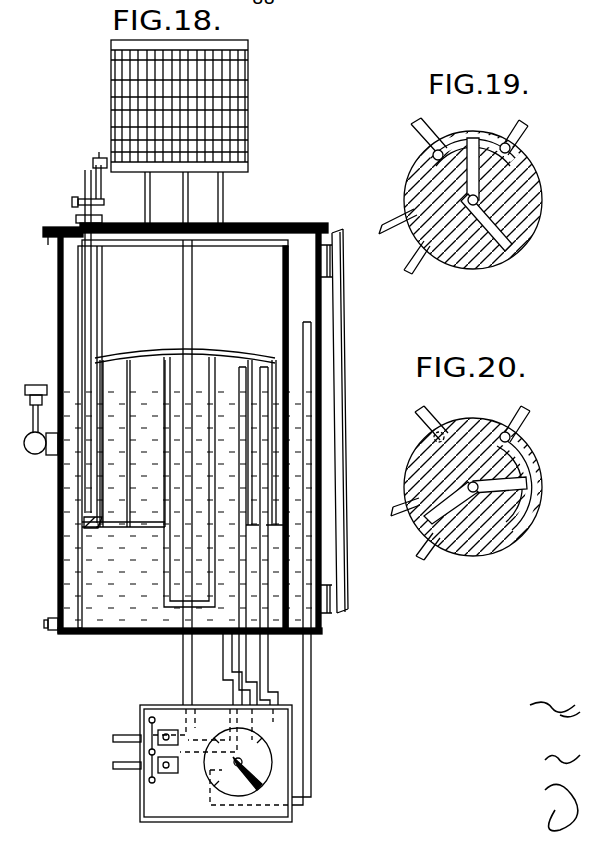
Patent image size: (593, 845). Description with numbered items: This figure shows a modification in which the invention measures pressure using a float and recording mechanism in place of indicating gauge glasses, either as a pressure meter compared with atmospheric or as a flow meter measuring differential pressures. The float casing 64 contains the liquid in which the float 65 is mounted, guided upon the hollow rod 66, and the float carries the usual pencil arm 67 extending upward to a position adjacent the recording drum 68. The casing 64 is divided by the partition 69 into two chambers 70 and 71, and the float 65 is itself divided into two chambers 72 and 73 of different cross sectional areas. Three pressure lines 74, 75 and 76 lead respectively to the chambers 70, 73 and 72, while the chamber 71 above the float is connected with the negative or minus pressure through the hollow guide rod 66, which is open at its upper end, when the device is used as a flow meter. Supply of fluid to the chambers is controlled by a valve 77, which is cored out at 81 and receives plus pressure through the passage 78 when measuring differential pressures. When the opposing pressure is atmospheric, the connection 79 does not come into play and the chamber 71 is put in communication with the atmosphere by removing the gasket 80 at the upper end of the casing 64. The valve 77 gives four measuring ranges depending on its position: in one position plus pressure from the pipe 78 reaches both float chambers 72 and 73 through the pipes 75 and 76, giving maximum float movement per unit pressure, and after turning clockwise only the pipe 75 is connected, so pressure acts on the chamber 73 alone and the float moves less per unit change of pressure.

In FIG. 18, the float casing 64 is at (58, 290).
In FIG. 18, the float 65 is at (148, 349).
In FIG. 18, the hollow rod 66 is at (182, 290).
In FIG. 18, the pencil arm 67 is at (86, 510).
In FIG. 18, the recording drum 68 is at (125, 87).
In FIG. 18, the partition 69 is at (283, 310).
In FIG. 18, the chamber 70 is at (305, 282).
In FIG. 18, the chamber 71 is at (283, 283).
In FIG. 18, the chamber 72 is at (137, 372).
In FIG. 18, the chamber 73 is at (115, 493).
In FIG. 18, the pressure line 74 is at (305, 521).
In FIG. 19, the pressure line 74 is at (392, 224).
In FIG. 20, the pressure line 74 is at (402, 524).
In FIG. 18, the pressure line 75 is at (268, 652).
In FIG. 19, the pressure line 75 is at (530, 133).
In FIG. 20, the pressure line 75 is at (532, 416).
In FIG. 18, the pressure line 76 is at (243, 665).
In FIG. 19, the pressure line 76 is at (412, 136).
In FIG. 20, the pressure line 76 is at (418, 414).
In FIG. 18, the valve 77 is at (268, 760).
In FIG. 19, the valve 77 is at (528, 205).
In FIG. 20, the valve 77 is at (478, 545).
In FIG. 18, the passage 78 is at (125, 772).
In FIG. 19, the passage 78 is at (420, 259).
In FIG. 20, the passage 78 is at (428, 560).
In FIG. 18, the connection 79 is at (122, 735).
In FIG. 18, the gasket 80 is at (49, 230).
In FIG. 19, the cored out portion 81 is at (506, 247).
In FIG. 20, the cored out portion 81 is at (497, 488).